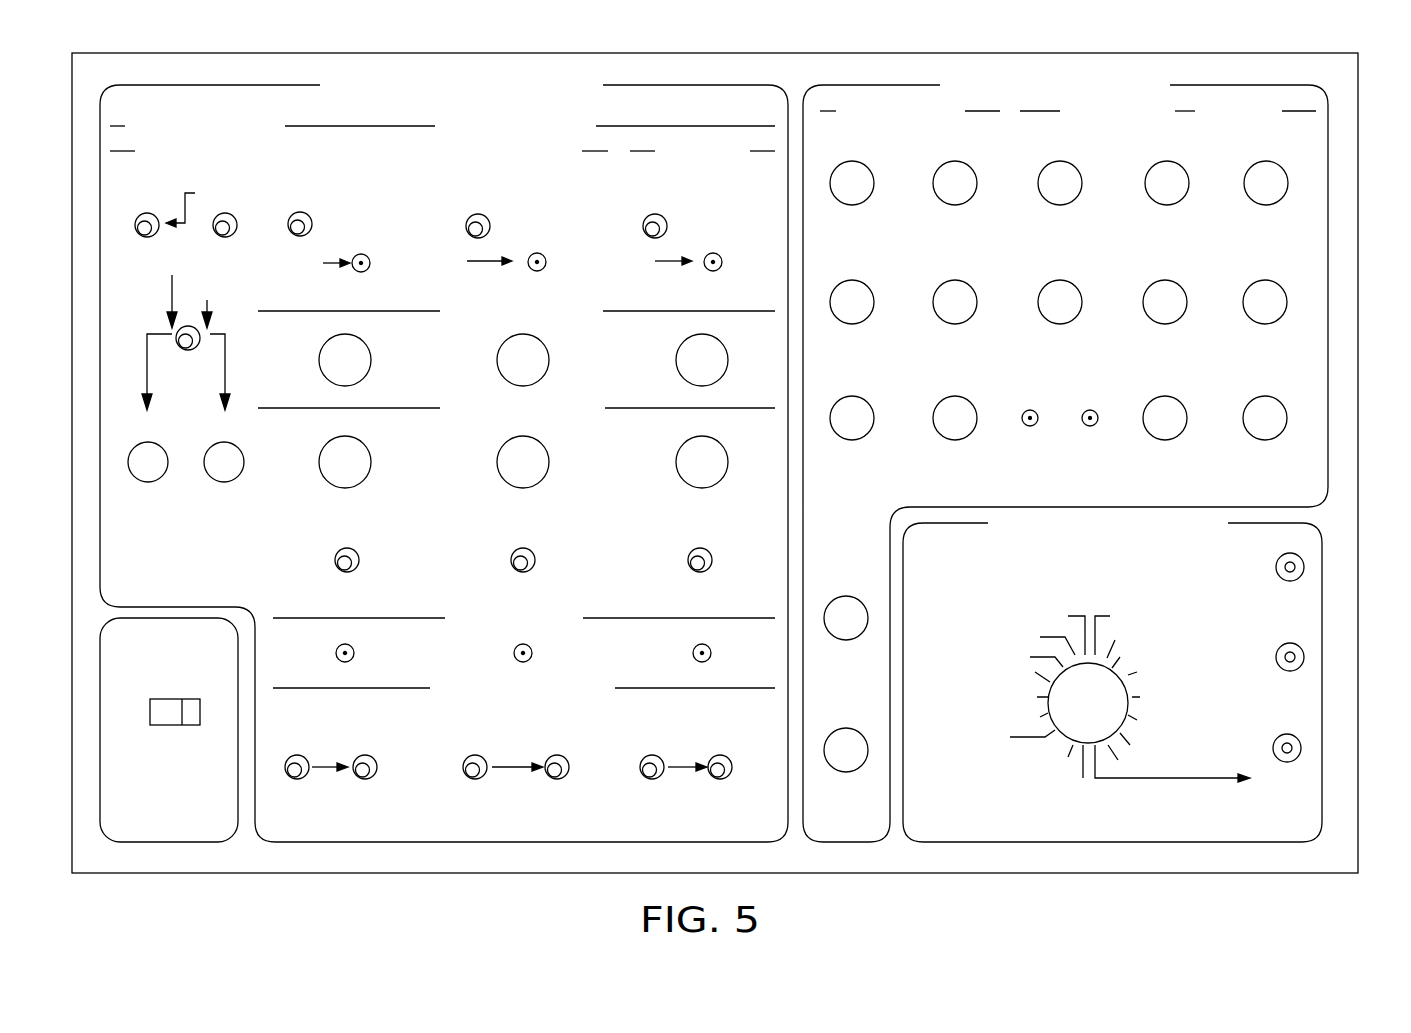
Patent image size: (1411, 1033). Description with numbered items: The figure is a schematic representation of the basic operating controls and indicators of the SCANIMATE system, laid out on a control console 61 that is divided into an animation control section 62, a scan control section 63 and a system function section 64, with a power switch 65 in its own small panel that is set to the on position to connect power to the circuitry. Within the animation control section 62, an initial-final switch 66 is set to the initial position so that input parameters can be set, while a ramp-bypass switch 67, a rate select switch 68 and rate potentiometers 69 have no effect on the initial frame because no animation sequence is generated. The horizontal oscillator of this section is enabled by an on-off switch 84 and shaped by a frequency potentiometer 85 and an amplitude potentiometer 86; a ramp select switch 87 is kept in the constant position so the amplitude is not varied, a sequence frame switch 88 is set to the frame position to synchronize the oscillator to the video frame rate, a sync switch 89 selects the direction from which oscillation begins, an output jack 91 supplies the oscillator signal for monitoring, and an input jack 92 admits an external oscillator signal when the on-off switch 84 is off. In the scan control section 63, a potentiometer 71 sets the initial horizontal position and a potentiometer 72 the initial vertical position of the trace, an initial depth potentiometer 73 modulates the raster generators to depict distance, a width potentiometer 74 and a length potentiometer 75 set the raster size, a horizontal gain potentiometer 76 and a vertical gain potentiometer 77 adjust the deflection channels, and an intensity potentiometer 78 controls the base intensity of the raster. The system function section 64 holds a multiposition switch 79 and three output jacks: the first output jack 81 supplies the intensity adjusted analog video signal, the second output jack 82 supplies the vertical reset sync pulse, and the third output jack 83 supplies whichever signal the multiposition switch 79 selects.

The control console 61 is at (1010, 47).
The animation control section 62 is at (240, 95).
The scan control section 63 is at (1312, 185).
The system function section 64 is at (1322, 537).
The power switch 65 is at (172, 726).
The initial-final switch 66 is at (140, 230).
The ramp-bypass switch 67 is at (215, 234).
The rate select switch 68 is at (180, 345).
The rate potentiometers 69 is at (221, 478).
The horizontal position potentiometer 71 is at (960, 185).
The vertical position potentiometer 72 is at (958, 290).
The initial depth potentiometer 73 is at (955, 403).
The width potentiometer 74 is at (1065, 185).
The length potentiometer 75 is at (1068, 290).
The horizontal gain potentiometer 76 is at (1172, 185).
The vertical gain potentiometer 77 is at (1170, 290).
The intensity potentiometer 78 is at (1158, 403).
The multiposition switch 79 is at (1091, 697).
The first output jack 81 is at (1305, 567).
The second output jack 82 is at (1305, 657).
The third output jack 83 is at (1302, 748).
The on-off switch 84 is at (294, 231).
The frequency potentiometer 85 is at (368, 359).
The amplitude potentiometer 86 is at (368, 459).
The ramp select switch 87 is at (337, 562).
The sequence frame switch 88 is at (305, 777).
The sync switch 89 is at (375, 777).
The output jack 91 is at (353, 648).
The input jack 92 is at (368, 269).